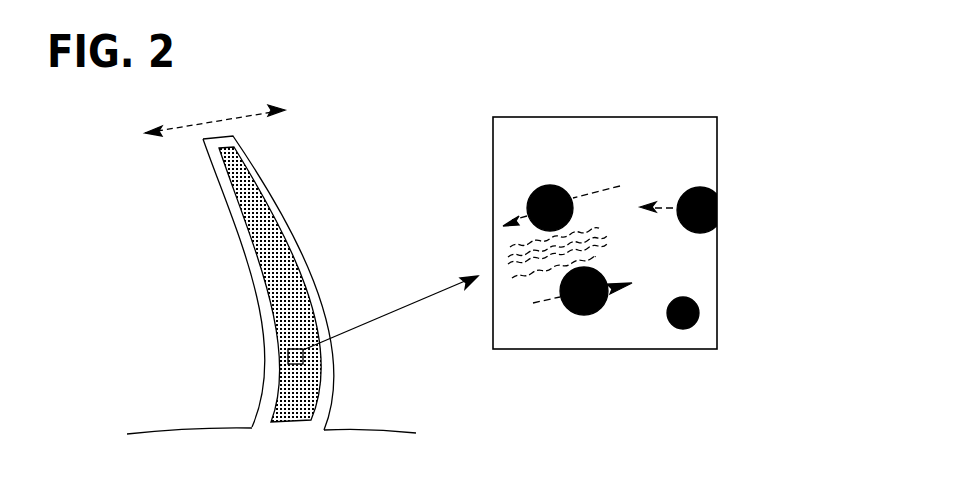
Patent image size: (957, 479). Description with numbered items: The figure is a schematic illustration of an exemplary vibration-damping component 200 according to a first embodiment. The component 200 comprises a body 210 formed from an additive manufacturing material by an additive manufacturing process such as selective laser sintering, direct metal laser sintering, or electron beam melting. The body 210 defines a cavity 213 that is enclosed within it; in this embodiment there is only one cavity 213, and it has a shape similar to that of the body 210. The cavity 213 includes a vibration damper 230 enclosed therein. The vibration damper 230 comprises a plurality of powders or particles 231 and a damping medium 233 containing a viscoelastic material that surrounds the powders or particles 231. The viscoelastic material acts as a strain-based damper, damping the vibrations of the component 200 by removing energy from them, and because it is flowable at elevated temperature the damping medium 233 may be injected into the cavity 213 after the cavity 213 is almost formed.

The component 200 is at (354, 116).
The body 210 is at (222, 188).
The cavity 213 is at (257, 232).
The vibration damper 230 is at (812, 175).
The powders or particles 231 is at (717, 202).
The damping medium 233 is at (698, 262).